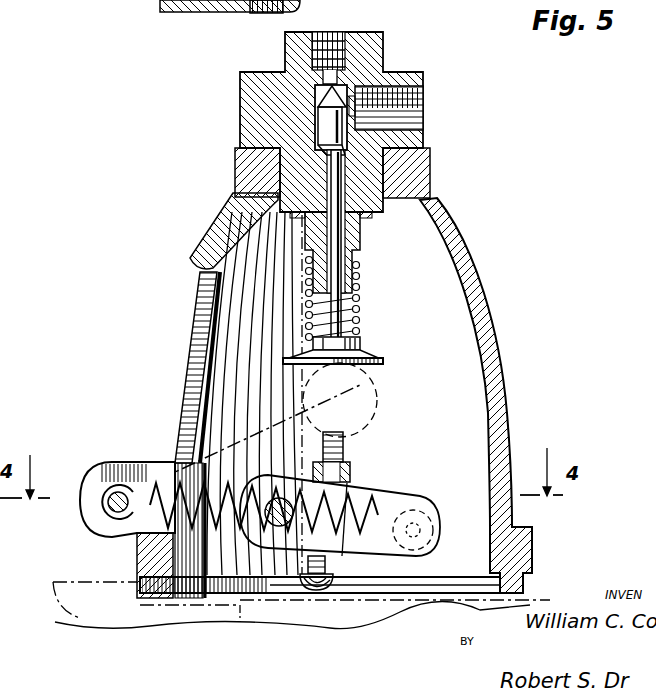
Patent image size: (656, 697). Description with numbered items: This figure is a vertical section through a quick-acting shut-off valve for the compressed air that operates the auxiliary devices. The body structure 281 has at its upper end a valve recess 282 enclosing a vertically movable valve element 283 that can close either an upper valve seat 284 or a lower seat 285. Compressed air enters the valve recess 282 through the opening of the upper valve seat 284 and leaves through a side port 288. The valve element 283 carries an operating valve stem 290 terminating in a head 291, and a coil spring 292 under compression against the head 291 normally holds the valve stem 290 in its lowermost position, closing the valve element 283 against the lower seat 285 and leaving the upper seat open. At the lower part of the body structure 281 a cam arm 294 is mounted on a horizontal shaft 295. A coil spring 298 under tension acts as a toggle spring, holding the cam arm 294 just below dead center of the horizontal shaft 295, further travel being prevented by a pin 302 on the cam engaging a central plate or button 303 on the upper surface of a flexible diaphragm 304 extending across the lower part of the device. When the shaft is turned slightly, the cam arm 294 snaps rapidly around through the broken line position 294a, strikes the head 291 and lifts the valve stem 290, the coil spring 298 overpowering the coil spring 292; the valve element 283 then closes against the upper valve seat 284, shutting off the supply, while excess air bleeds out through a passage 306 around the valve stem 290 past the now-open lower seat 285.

The body structure 281 is at (488, 313).
The valve recess 282 is at (320, 97).
The valve element 283 is at (328, 125).
The upper valve seat 284 is at (340, 88).
The lower seat 285 is at (317, 152).
The side port 288 is at (357, 111).
The valve stem 290 is at (352, 249).
The head 291 is at (358, 357).
The coil spring 292 is at (344, 305).
The cam arm 294 is at (377, 490).
The broken line position of cam arm 294a is at (375, 392).
The horizontal shaft 295 is at (262, 476).
The coil spring 298 is at (172, 533).
The pin 302 is at (313, 597).
The central plate or button 303 is at (348, 593).
The flexible diaphragm 304 is at (193, 600).
The passage 306 is at (345, 185).